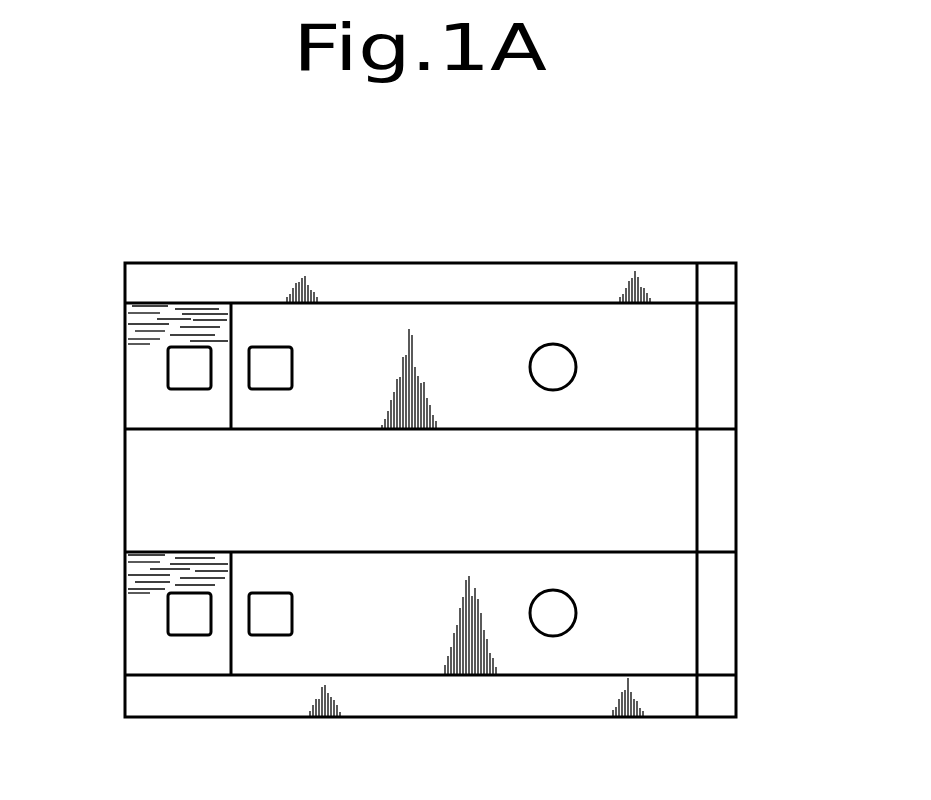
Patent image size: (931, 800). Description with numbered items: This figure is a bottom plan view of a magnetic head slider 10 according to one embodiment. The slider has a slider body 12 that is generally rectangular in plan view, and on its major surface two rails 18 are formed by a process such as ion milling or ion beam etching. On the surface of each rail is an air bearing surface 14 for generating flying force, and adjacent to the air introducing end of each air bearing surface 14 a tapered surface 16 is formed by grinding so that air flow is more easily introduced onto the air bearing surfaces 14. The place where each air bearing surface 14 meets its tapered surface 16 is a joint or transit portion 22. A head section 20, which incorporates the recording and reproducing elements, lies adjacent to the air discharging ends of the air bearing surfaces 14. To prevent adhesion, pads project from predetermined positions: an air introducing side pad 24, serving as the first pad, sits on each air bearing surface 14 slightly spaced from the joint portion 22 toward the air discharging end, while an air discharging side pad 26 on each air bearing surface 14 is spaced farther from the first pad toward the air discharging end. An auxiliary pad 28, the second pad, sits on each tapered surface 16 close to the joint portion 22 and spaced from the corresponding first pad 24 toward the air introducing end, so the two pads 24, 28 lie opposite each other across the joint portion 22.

The magnetic head slider 10 is at (478, 236).
The slider body 12 is at (185, 262).
The air bearing surfaces 14 is at (357, 333).
The tapered surfaces 16 is at (143, 413).
The rails 18 is at (645, 431).
The head section 20 is at (722, 378).
The joint portions 22 is at (229, 345).
The air introducing side pads 24 is at (267, 360).
The air discharging side pads 26 is at (551, 353).
The auxiliary pads 28 is at (178, 373).